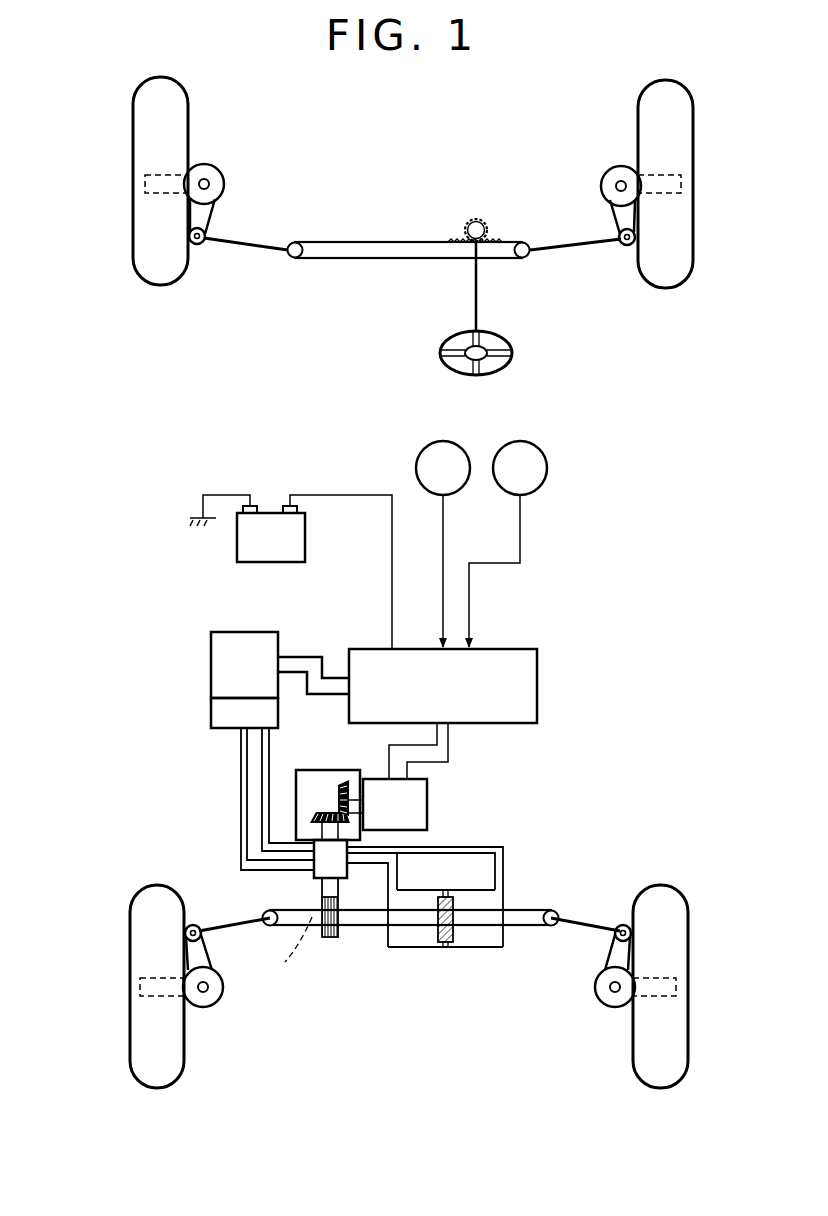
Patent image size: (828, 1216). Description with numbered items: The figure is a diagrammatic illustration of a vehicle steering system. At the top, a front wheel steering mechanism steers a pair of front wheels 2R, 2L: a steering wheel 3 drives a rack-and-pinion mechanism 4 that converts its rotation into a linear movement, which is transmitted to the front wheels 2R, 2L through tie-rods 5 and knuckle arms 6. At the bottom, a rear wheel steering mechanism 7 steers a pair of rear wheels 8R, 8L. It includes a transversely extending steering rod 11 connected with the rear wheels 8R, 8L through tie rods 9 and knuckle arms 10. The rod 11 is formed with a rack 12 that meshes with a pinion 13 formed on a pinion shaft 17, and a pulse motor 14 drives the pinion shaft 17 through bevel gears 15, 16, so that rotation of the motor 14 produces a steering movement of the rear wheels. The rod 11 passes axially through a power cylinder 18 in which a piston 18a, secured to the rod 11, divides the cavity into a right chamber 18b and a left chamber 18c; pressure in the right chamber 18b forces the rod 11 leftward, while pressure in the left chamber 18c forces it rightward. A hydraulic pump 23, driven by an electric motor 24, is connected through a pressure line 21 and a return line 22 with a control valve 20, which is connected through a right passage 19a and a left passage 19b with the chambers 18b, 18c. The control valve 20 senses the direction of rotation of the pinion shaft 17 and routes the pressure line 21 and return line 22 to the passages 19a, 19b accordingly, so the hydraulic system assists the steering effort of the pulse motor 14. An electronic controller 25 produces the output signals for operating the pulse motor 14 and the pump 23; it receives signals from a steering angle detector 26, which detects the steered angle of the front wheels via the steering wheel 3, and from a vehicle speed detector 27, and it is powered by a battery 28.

The front wheel 2L is at (133, 116).
The front wheel 2R is at (693, 114).
The steering wheel 3 is at (498, 333).
The rack-and-pinion mechanism 4 is at (490, 222).
The tie-rods 5 is at (236, 246).
The knuckle arms 6 is at (210, 207).
The rear wheel steering mechanism 7 is at (527, 784).
The rear wheel 8L is at (130, 934).
The rear wheel 8R is at (688, 934).
The tie rods 9 is at (232, 927).
The knuckle arms 10 is at (210, 958).
The steering rod 11 is at (356, 926).
The rack 12 is at (285, 962).
The pinion 13 is at (330, 937).
The pulse motor 14 is at (427, 800).
The bevel gear 15 is at (344, 785).
The bevel gear 16 is at (320, 813).
The pinion shaft 17 is at (322, 886).
The power cylinder 18 is at (446, 950).
The piston 18a is at (455, 930).
The right chamber 18b is at (497, 938).
The left chamber 18c is at (388, 946).
The right passage 19a is at (476, 847).
The left passage 19b is at (397, 868).
The control valve 20 is at (347, 879).
The pressure line 21 is at (241, 793).
The return line 22 is at (270, 750).
The hydraulic pump 23 is at (211, 711).
The electric motor 24 is at (211, 657).
The electronic controller 25 is at (537, 662).
The steering angle detector 26 is at (437, 442).
The vehicle speed detector 27 is at (523, 442).
The battery 28 is at (286, 562).